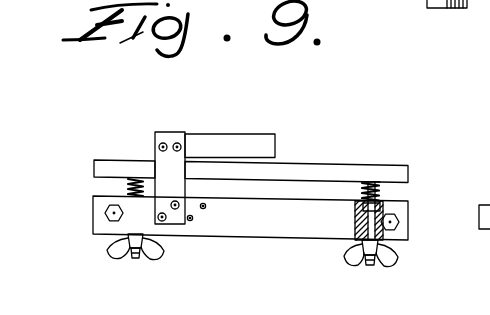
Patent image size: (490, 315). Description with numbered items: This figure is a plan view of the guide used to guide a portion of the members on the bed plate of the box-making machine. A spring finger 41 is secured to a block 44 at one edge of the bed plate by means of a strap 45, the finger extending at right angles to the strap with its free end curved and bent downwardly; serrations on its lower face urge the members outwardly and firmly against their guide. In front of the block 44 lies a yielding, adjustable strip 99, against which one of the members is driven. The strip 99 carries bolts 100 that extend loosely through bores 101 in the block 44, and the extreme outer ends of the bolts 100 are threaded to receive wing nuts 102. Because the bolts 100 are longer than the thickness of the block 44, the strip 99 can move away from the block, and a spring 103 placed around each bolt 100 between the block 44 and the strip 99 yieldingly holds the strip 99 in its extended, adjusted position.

The spring finger 41 is at (232, 143).
The block 44 is at (303, 212).
The strap 45 is at (156, 152).
The yielding, adjustable strip 99 is at (372, 173).
The bolt 100 is at (134, 259).
The bore 101 is at (360, 223).
The wing nut 102 is at (157, 256).
The spring 103 is at (128, 182).